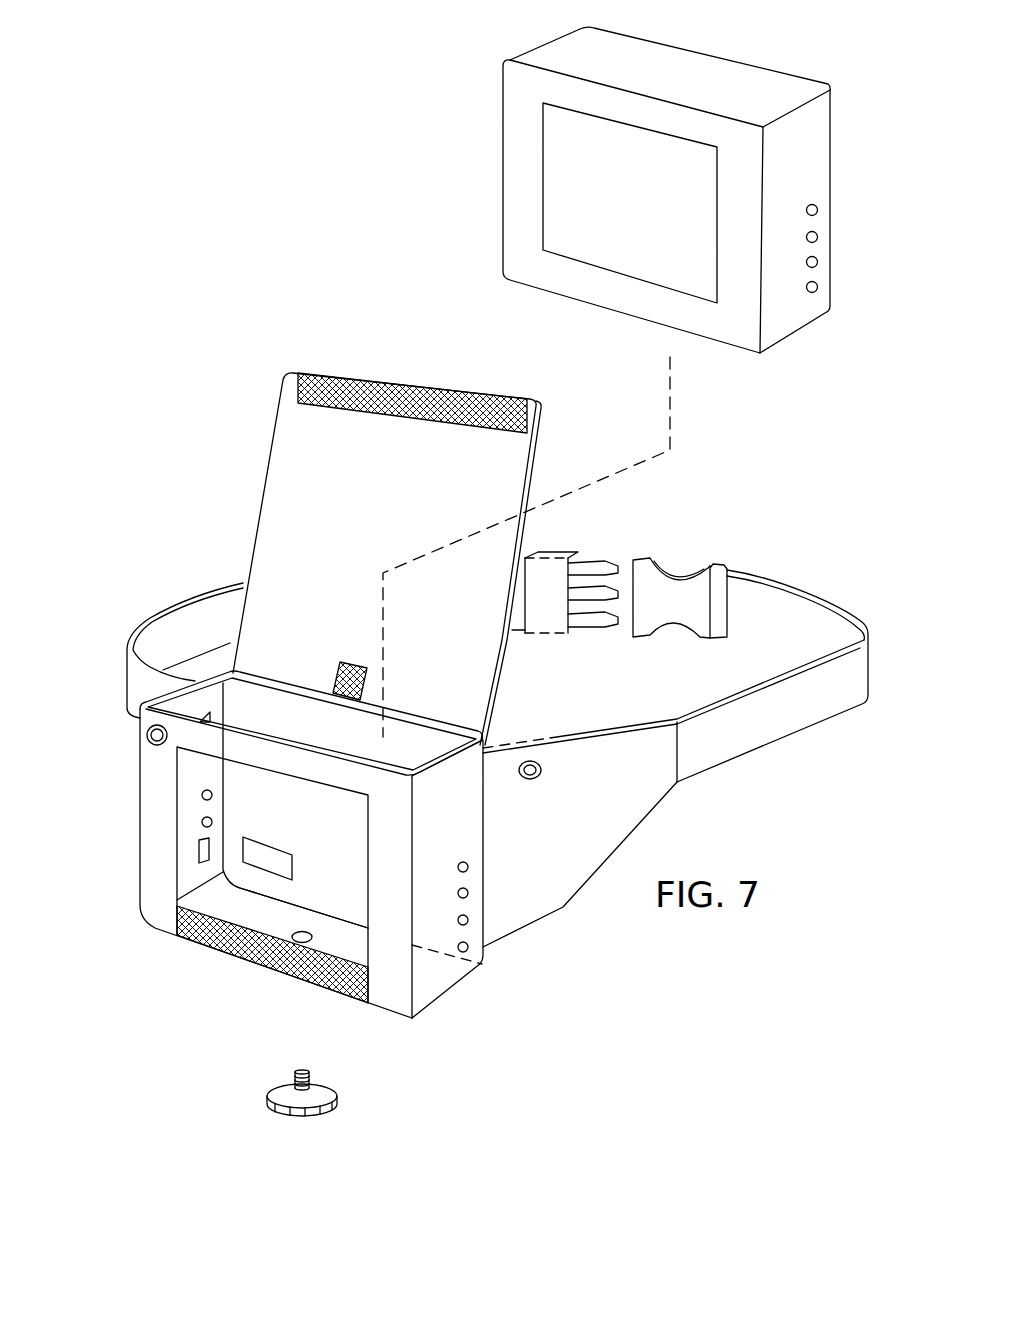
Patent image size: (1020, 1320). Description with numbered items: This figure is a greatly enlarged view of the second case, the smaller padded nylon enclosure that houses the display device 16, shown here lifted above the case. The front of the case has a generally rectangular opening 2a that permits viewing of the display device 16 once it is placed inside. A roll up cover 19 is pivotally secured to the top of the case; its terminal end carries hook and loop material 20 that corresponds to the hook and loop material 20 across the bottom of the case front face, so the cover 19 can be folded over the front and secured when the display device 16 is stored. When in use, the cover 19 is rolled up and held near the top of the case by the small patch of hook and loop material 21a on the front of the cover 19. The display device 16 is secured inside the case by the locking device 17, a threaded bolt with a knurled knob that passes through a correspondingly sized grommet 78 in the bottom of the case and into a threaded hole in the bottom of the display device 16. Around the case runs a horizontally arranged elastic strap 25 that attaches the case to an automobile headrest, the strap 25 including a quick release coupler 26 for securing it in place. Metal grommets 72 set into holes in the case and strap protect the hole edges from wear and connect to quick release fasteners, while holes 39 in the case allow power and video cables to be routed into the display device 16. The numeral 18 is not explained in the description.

The display device 16 is at (518, 163).
The roll up cover 19 is at (290, 510).
The hook and loop material 20 is at (376, 370).
The small patch of hook and loop material 21a is at (340, 665).
The generally rectangular opening 2a is at (177, 842).
The grommet 78 is at (278, 967).
The floor 18 is at (273, 927).
The metal grommets 72 is at (540, 747).
The elastic strap 25 is at (753, 757).
The holes 39 is at (482, 937).
The quick release coupler 26 is at (662, 562).
The locking device 17 is at (337, 1102).